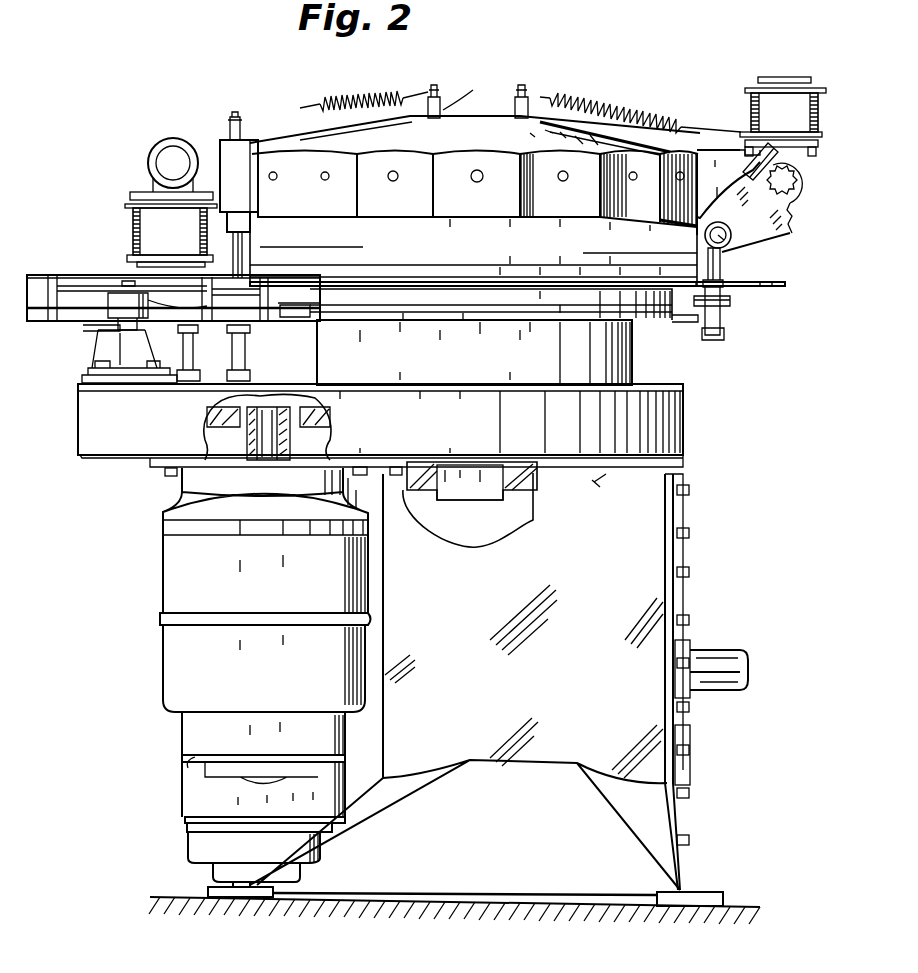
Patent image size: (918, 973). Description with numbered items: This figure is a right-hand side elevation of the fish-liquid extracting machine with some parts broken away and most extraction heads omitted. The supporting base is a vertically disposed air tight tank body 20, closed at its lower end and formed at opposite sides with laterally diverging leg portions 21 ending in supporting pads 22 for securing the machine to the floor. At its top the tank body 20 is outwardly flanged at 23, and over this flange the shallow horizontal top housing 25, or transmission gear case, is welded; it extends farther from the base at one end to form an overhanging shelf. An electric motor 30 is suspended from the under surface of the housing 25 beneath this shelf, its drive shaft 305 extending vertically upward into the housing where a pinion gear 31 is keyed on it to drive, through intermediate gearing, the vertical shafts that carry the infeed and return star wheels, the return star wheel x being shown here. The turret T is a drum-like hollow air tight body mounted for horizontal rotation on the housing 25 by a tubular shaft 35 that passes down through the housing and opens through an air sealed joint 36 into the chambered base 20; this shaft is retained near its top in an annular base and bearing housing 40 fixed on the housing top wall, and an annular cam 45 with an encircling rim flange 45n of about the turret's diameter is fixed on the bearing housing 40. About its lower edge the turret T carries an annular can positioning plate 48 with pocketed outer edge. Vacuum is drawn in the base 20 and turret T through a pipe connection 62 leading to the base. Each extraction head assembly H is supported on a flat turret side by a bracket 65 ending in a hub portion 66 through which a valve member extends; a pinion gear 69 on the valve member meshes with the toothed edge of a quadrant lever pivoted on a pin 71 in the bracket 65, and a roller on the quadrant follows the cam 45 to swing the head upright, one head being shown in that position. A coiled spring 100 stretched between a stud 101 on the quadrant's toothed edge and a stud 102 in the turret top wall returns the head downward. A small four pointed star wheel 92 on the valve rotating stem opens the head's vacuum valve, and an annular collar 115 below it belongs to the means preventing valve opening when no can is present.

The tank body 20 is at (660, 588).
The leg portions 21 is at (620, 848).
The supporting pads 22 is at (212, 888).
The flange 23 is at (600, 487).
The top housing 25 is at (660, 432).
The electric motor 30 is at (168, 560).
The pinion gear 31 is at (320, 417).
The drive shaft 305 is at (320, 442).
The tubular shaft 35 is at (458, 490).
The air sealed joint 36 is at (608, 475).
The annular base and bearing housing 40 is at (628, 363).
The annular cam 45 is at (608, 292).
The rim flange 45n is at (413, 315).
The can positioning plate 48 is at (745, 290).
The pipe connection 62 is at (728, 652).
The bracket 65 is at (222, 163).
The hub portion 66 is at (153, 152).
The pinion gear 69 is at (793, 195).
The pin 71 is at (722, 239).
The four pointed star wheel 92 is at (725, 306).
The coiled spring 100 is at (363, 90).
The stud 101 is at (513, 100).
The stud 102 is at (230, 118).
The annular collar 115 is at (724, 336).
The extraction head assembly H is at (121, 229).
The turret T is at (563, 143).
The star wheel x is at (98, 277).